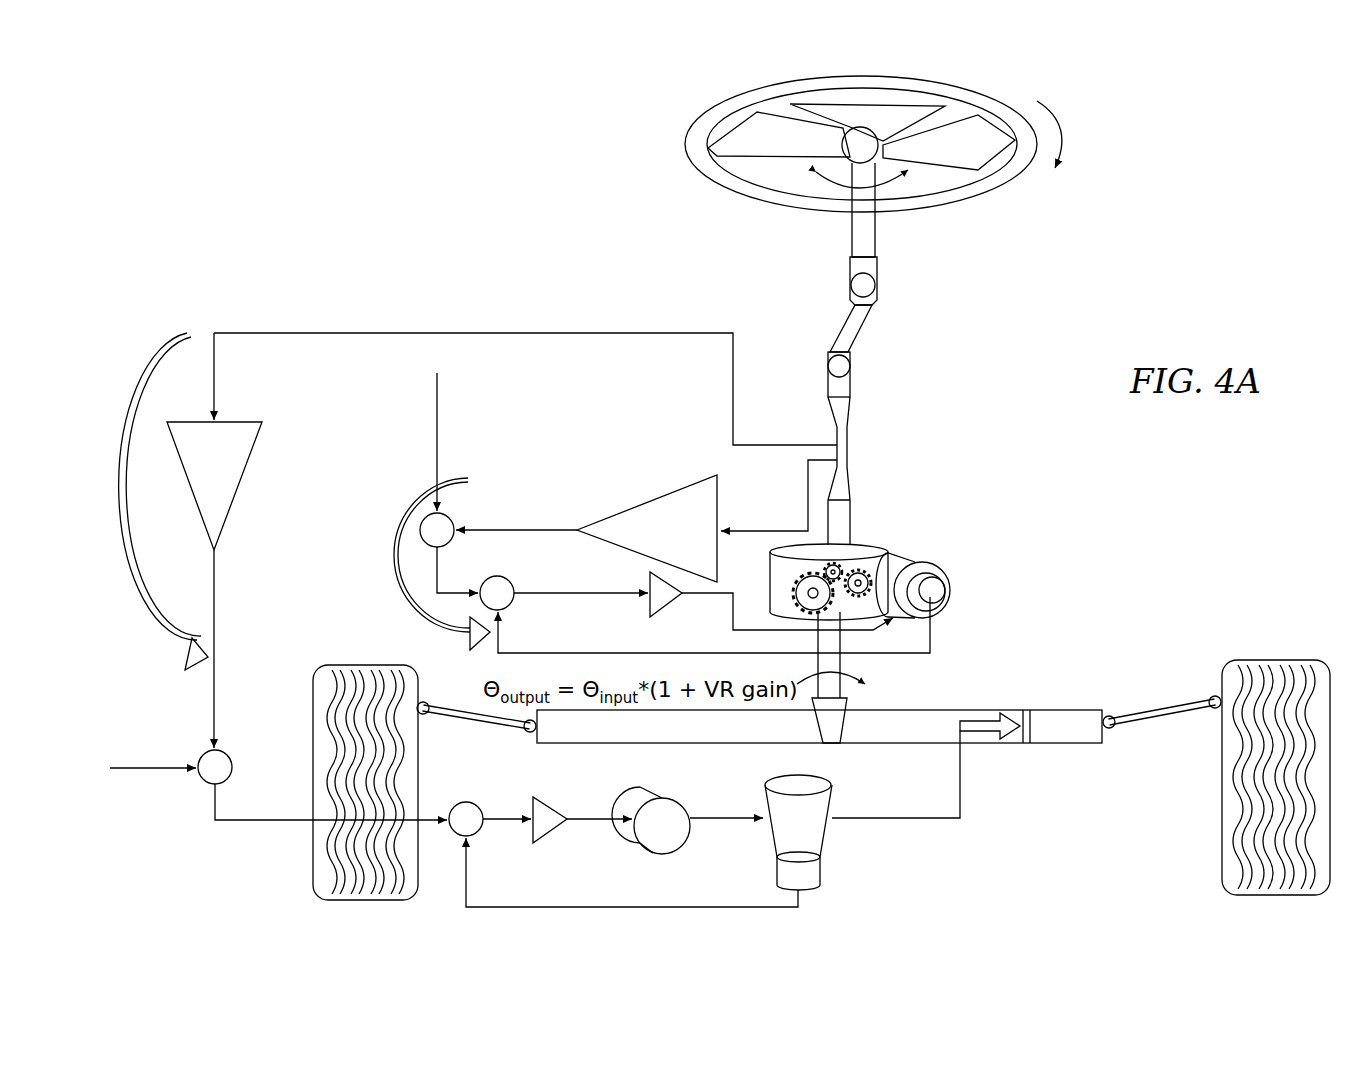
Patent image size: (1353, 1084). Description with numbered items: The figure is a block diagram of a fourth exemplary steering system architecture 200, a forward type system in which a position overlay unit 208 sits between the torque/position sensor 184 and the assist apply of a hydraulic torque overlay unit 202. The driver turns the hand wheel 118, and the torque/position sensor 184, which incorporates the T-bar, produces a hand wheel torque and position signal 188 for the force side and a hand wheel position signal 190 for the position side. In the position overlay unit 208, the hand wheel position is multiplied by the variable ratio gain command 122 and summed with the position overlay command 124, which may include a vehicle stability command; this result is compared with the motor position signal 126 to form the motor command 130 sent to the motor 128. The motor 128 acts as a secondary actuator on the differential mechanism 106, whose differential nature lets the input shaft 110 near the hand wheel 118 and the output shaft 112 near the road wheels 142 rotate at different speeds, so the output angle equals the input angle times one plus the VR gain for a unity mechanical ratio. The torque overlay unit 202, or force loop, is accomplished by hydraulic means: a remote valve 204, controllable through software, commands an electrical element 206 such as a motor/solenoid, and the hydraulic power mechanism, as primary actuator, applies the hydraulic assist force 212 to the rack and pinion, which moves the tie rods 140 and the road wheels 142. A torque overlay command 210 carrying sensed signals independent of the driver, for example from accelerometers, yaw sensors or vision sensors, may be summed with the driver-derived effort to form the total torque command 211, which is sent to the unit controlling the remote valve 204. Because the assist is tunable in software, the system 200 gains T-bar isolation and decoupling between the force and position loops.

The hand wheel 118 is at (735, 92).
The steering system architecture 200 is at (551, 278).
The input shaft 110 is at (838, 520).
The torque/position sensor 184 is at (935, 420).
The hand wheel torque and position signal 188 is at (685, 385).
The hand wheel position signal 190 is at (780, 490).
The position overlay command 124 is at (337, 405).
The variable ratio gain command 122 is at (630, 505).
The motor command 130 is at (543, 560).
The motor position signal 126 is at (632, 645).
The differential mechanism 106 is at (870, 548).
The motor 128 is at (940, 573).
The output shaft 112 is at (830, 637).
The hydraulic assist force 212 is at (1055, 605).
The tie rods 140 is at (1143, 712).
The road wheels 142 is at (1222, 792).
The torque overlay unit 202 is at (110, 640).
The position overlay unit 208 is at (318, 565).
The torque overlay command 210 is at (100, 820).
The total torque command 211 is at (237, 882).
The electrical element 206 is at (665, 838).
The remote valve 204 is at (1000, 822).